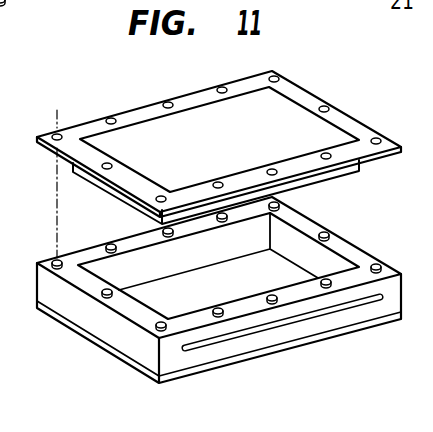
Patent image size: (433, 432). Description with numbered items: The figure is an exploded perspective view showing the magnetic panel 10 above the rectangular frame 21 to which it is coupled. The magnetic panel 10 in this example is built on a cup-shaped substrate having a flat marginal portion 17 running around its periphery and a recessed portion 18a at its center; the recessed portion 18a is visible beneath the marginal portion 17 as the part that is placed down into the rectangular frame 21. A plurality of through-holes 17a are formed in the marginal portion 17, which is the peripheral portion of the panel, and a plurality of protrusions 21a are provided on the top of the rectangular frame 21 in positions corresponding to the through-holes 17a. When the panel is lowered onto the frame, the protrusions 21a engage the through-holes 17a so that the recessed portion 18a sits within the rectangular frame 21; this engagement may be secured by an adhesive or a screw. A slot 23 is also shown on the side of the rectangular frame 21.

The magnetic panel 10 is at (83, 109).
The marginal portion 17 is at (308, 97).
The through-holes 17a is at (167, 102).
The recessed portion 18a is at (332, 174).
The rectangular frame 21 is at (132, 344).
The protrusions 21a is at (106, 296).
The slot 23 is at (289, 325).